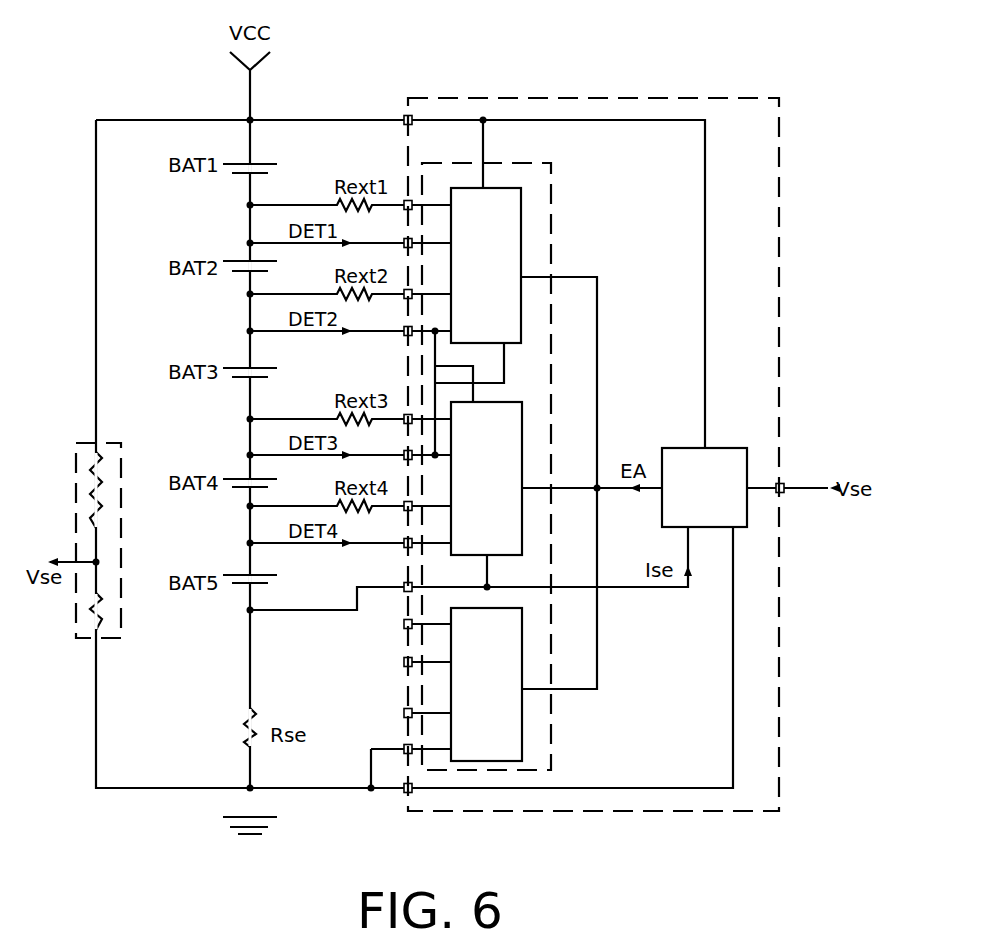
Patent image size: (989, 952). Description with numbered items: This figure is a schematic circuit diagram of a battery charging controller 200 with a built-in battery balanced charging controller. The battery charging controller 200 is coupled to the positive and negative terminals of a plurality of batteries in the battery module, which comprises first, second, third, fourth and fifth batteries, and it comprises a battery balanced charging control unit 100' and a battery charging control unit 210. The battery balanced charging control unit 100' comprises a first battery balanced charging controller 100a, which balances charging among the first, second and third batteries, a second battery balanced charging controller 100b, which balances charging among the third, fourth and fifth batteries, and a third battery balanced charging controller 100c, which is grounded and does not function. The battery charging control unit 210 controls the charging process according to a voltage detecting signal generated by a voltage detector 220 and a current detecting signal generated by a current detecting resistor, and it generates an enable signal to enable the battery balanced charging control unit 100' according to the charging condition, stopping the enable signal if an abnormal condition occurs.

The battery charging controller 200 is at (767, 107).
The battery balanced charging control unit 100' is at (524, 460).
The first battery balanced charging controller 100a is at (486, 265).
The second battery balanced charging controller 100b is at (486, 478).
The third battery balanced charging controller 100c is at (486, 684).
The battery charging control unit 210 is at (704, 487).
The voltage detector 220 is at (110, 449).